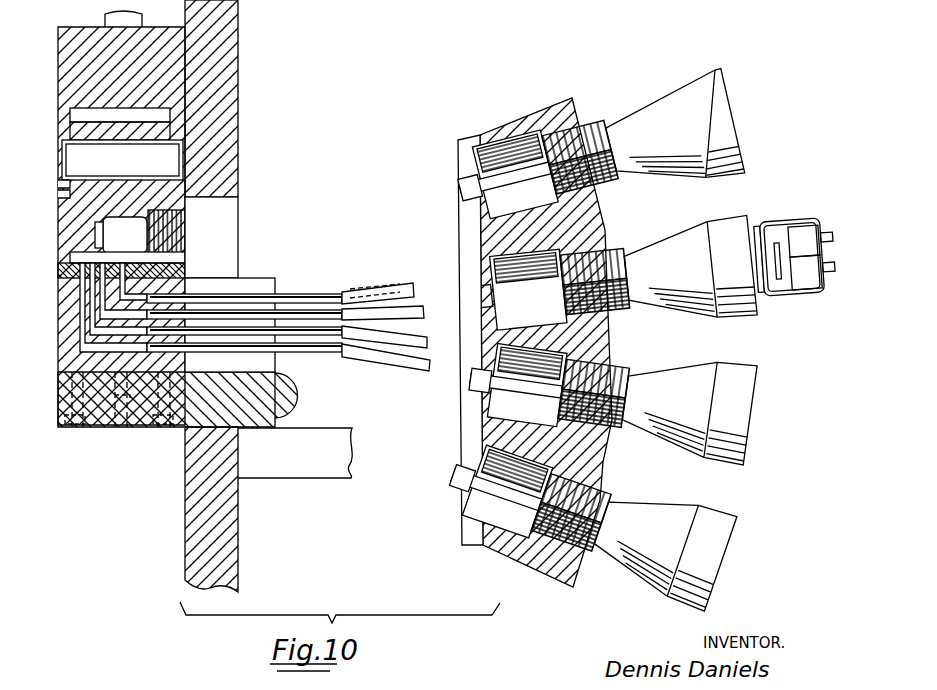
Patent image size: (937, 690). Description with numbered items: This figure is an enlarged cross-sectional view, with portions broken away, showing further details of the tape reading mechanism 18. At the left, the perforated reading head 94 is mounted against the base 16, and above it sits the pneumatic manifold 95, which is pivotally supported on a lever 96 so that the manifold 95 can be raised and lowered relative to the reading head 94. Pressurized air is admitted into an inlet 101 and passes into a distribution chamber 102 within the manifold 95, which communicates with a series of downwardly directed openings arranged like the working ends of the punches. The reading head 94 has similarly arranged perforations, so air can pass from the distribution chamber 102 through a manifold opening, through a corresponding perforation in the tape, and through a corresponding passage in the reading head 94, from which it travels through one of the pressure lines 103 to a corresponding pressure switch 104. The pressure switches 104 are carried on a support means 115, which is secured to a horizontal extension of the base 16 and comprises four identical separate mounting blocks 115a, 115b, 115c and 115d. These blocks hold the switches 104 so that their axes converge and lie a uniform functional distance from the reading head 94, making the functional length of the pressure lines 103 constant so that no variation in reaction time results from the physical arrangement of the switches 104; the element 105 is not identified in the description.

The base 16 is at (227, 90).
The tape reading mechanism 18 is at (117, 435).
The perforated reading head 94 is at (66, 328).
The pneumatic manifold 95 is at (163, 193).
The lever 96 is at (178, 68).
The inlet 101 is at (173, 235).
The distribution chamber 102 is at (104, 260).
The pressure lines 103 is at (490, 277).
The pressure switch 104 is at (745, 210).
The horn 105 is at (672, 90).
The support means 115 is at (577, 96).
The mounting block 115a is at (600, 197).
The mounting block 115b is at (603, 233).
The mounting block 115c is at (602, 363).
The mounting block 115d is at (590, 488).